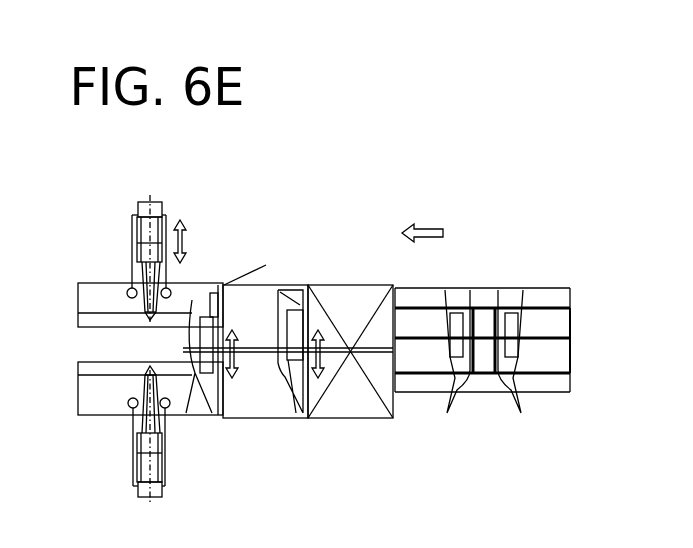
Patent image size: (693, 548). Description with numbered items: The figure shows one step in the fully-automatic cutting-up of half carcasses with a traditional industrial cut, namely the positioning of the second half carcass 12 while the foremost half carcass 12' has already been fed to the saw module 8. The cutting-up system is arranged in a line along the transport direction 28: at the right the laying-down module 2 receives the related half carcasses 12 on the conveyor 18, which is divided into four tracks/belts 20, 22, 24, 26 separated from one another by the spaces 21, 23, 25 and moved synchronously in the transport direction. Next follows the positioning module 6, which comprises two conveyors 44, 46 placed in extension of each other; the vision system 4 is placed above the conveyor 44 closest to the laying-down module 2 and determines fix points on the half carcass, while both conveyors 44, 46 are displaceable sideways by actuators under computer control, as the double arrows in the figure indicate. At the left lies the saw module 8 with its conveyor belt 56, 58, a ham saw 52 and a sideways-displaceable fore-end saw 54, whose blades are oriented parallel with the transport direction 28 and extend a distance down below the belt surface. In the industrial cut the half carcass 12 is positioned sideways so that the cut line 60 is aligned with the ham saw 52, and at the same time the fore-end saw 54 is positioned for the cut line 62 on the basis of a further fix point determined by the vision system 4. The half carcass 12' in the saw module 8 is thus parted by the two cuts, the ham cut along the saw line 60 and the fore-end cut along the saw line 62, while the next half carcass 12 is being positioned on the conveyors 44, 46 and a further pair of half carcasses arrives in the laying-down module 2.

The laying-down module 2 is at (486, 262).
The vision system 4 is at (390, 285).
The positioning module 6 is at (313, 268).
The saw module 8 is at (183, 233).
The half carcass 12 is at (393, 327).
The half carcass 12' is at (375, 315).
The conveyor 18 is at (549, 413).
The track/belt 20 is at (534, 271).
The space 21 is at (529, 292).
The track/belt 22 is at (619, 322).
The space 23 is at (529, 347).
The track/belt 24 is at (620, 361).
The space 25 is at (529, 391).
The track/belt 26 is at (534, 414).
The transport direction 28 is at (424, 232).
The conveyor 44 is at (372, 404).
The conveyor 46 is at (245, 404).
The ham saw 52 is at (114, 434).
The fore-end saw 54 is at (108, 258).
The conveyor belt 56 is at (177, 300).
The conveyor belt 58 is at (180, 396).
The saw line 60 is at (244, 407).
The saw line 62 is at (190, 302).